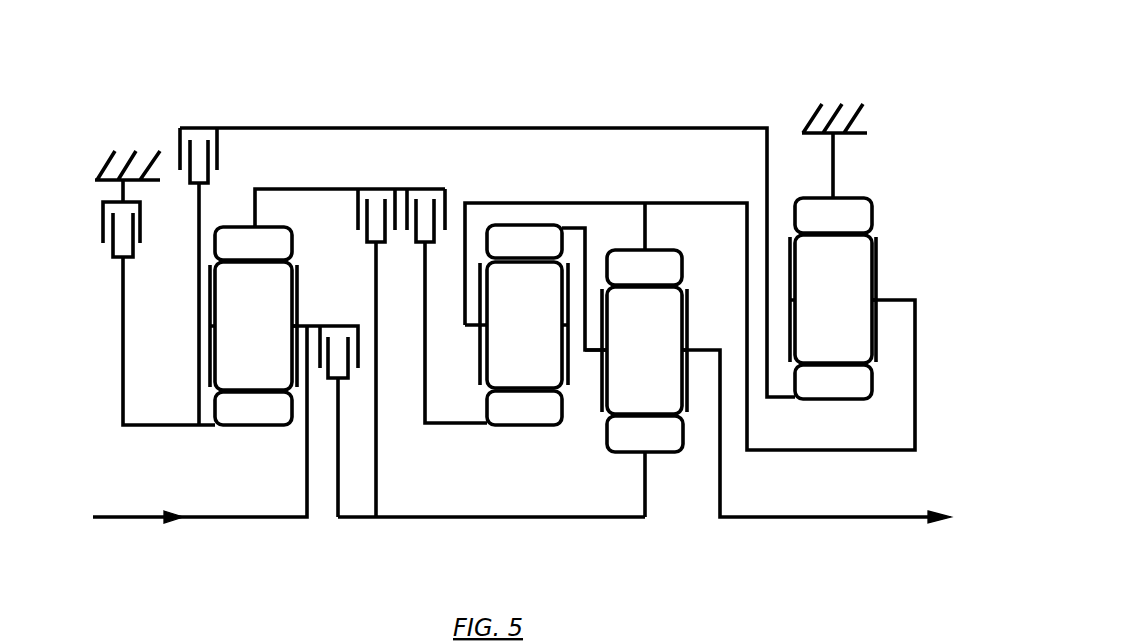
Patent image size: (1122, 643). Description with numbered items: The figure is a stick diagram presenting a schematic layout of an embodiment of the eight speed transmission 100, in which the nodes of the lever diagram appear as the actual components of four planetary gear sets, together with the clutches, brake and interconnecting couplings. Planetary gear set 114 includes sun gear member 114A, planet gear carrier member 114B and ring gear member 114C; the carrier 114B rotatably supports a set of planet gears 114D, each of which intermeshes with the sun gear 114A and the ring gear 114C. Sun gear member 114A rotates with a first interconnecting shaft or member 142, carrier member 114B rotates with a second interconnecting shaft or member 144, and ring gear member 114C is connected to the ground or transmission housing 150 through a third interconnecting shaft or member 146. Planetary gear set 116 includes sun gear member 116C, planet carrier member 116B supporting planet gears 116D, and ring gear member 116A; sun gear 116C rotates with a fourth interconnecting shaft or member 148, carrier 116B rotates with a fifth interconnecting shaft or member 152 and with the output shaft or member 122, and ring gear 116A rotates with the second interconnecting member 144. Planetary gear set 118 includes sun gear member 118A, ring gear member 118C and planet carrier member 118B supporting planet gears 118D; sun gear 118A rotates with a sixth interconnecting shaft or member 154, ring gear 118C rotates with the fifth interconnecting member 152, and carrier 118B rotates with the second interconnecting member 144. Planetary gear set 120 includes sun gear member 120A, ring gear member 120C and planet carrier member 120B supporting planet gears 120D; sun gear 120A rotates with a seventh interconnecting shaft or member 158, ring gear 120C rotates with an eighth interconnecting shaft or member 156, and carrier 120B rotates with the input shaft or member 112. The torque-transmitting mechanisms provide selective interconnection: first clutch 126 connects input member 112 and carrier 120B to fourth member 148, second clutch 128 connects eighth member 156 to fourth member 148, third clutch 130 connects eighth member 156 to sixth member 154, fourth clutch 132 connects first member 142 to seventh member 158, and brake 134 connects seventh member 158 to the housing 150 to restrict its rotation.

The eight speed transmission 100 is at (442, 81).
The input shaft or member 112 is at (124, 520).
The planetary gear set 114 is at (861, 342).
The sun gear member 114A is at (833, 382).
The planet gear carrier member 114B is at (878, 258).
The ring gear member 114C is at (833, 215).
The planet gears 114D is at (833, 299).
The planetary gear set 116 is at (659, 388).
The ring gear member 116A is at (644, 267).
The planet carrier member 116B is at (693, 310).
The sun gear member 116C is at (645, 466).
The planet gears 116D is at (644, 350).
The planetary gear set 118 is at (505, 367).
The sun gear member 118A is at (524, 408).
The planet carrier member 118B is at (509, 430).
The ring gear member 118C is at (524, 241).
The planet gears 118D is at (524, 325).
The planetary gear set 120 is at (282, 369).
The sun gear member 120A is at (253, 408).
The planet carrier member 120B is at (298, 285).
The ring gear member 120C is at (253, 243).
The planet gears 120D is at (253, 326).
The output shaft or member 122 is at (845, 519).
The first clutch 126 is at (360, 326).
The second clutch 128 is at (356, 198).
The third clutch 130 is at (445, 190).
The fourth clutch 132 is at (218, 142).
The brake 134 is at (142, 233).
The first interconnecting shaft or member 142 is at (555, 128).
The second interconnecting shaft or member 144 is at (558, 203).
The third interconnecting shaft or member 146 is at (836, 176).
The fourth interconnecting shaft or member 148 is at (500, 519).
The transmission housing 150 is at (152, 180).
The fifth interconnecting shaft or member 152 is at (588, 350).
The sixth interconnecting shaft or member 154 is at (425, 410).
The eighth interconnecting shaft or member 156 is at (308, 187).
The seventh interconnecting shaft or member 158 is at (123, 338).